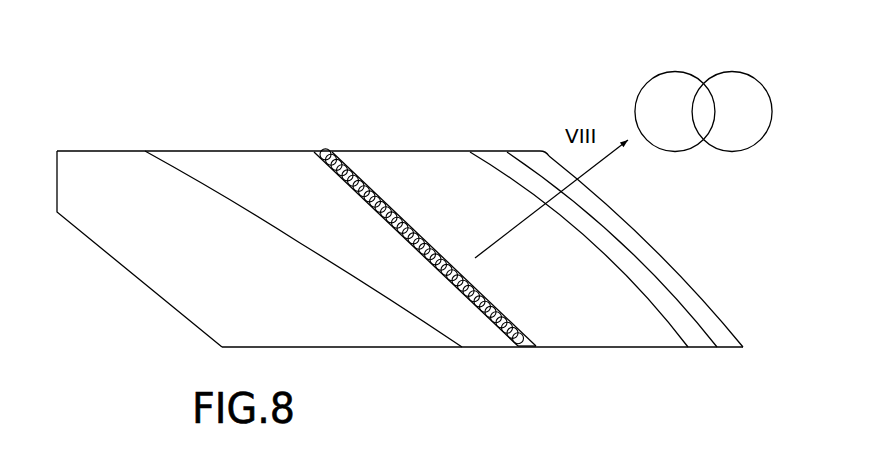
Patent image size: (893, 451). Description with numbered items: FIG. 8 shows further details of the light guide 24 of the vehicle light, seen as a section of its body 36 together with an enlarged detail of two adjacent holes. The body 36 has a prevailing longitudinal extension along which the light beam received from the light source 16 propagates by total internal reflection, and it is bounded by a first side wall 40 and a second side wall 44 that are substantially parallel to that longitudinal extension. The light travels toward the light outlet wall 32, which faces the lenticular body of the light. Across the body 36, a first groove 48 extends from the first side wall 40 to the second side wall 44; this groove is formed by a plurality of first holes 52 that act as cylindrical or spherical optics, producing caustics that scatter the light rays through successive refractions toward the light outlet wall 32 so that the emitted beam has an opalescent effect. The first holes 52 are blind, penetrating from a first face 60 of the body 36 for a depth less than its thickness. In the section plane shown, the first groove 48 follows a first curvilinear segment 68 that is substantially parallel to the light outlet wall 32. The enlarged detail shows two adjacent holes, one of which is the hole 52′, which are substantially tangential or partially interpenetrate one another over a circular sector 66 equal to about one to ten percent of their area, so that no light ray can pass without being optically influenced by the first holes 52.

The light source 16 is at (172, 257).
The light guide 24 is at (272, 177).
The body 36 is at (381, 295).
The first side wall 40 is at (445, 151).
The second side wall 44 is at (420, 350).
The first curvilinear segment 68 is at (316, 153).
The first holes 52 is at (522, 322).
The first groove 48 is at (528, 350).
The light outlet wall 32 is at (632, 213).
The first face 60 is at (627, 328).
The first adjacent hole 52′ is at (667, 72).
The circular sector 66 is at (702, 113).